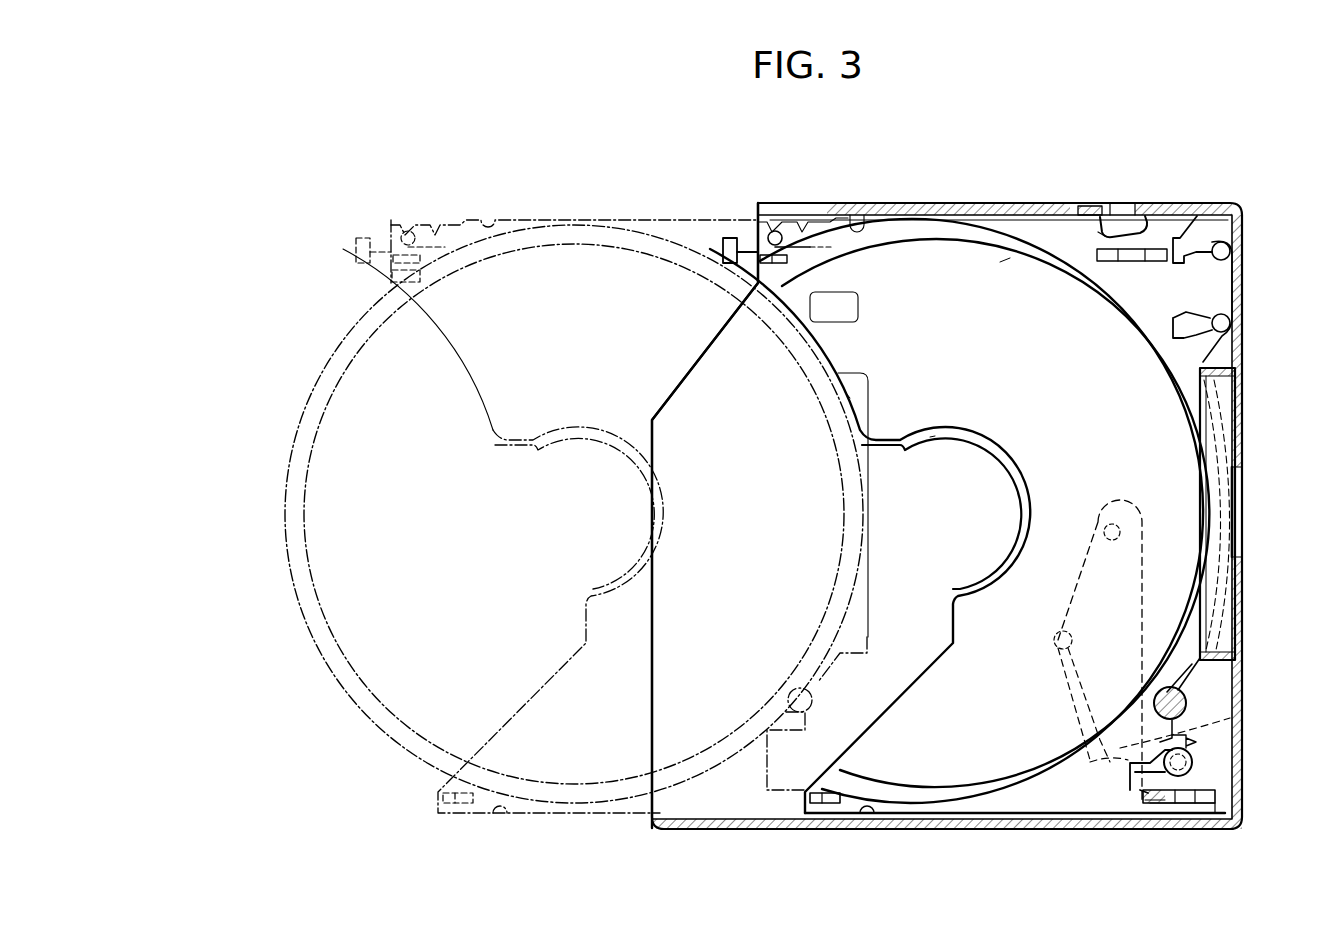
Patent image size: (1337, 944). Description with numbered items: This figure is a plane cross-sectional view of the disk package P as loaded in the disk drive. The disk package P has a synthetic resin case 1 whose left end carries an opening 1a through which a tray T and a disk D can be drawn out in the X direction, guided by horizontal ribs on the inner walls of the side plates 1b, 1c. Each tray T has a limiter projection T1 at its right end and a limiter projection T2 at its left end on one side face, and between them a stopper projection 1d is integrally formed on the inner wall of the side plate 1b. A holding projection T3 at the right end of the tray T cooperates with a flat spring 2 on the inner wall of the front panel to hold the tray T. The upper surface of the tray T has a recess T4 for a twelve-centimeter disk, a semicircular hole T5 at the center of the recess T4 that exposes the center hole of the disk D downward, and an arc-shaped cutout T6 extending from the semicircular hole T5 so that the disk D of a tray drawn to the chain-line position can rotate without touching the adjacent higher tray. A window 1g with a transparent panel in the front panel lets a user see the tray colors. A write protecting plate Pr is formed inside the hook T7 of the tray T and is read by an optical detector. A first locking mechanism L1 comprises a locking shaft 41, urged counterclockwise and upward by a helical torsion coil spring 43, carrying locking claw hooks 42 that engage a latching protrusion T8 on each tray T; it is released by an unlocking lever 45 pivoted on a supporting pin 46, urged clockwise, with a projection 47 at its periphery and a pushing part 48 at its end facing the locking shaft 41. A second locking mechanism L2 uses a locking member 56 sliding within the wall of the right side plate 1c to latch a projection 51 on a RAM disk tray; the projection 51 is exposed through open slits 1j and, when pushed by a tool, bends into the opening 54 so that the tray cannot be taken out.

The case 1 is at (770, 843).
The opening 1a is at (648, 692).
The side plate 1b is at (1030, 831).
The right side plate 1c is at (1012, 204).
The stopper projection 1d is at (825, 830).
The window 1g is at (1238, 532).
The slit 1j is at (1136, 214).
The flat spring 2 is at (1230, 356).
The locking shaft 41 is at (1195, 760).
The locking claw hook 42 is at (1132, 792).
The helical torsion coil spring 43 is at (1196, 786).
The unlocking lever 45 is at (1105, 770).
The supporting pin 46 is at (1114, 522).
The projection 47 is at (1054, 648).
The pushing part 48 is at (1185, 722).
The projection 51 is at (1126, 212).
The opening 54 is at (1108, 238).
The locking member 56 is at (1088, 210).
The disk D is at (300, 608).
The first locking mechanism L1 is at (1212, 738).
The second locking mechanism L2 is at (1116, 256).
The disk package P is at (1244, 668).
The write protecting plate Pr is at (777, 230).
The tray T is at (915, 706).
The limiter projection T1 is at (1206, 816).
The limiter projection T2 is at (800, 820).
The holding projection T3 is at (1210, 292).
The recess T4 is at (1008, 258).
The semicircular hole T5 is at (1003, 483).
The arc-shaped cutout T6 is at (845, 394).
The hook T7 is at (730, 237).
The latching protrusion T8 is at (1150, 802).
The X direction X is at (1270, 517).